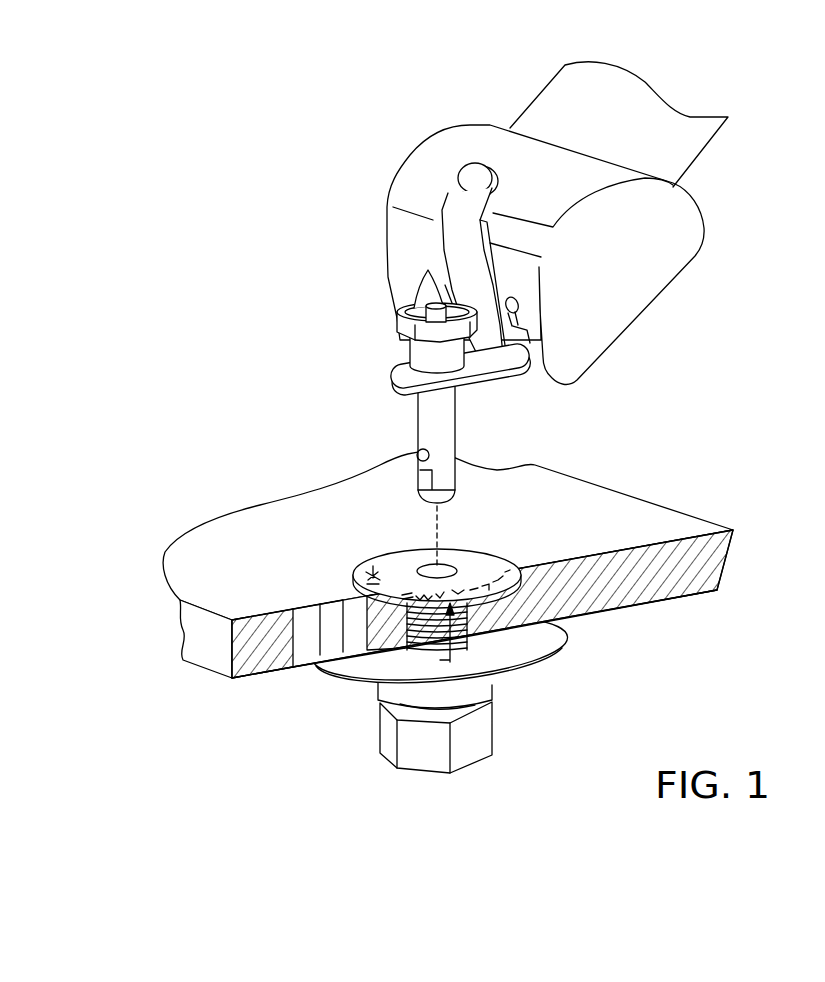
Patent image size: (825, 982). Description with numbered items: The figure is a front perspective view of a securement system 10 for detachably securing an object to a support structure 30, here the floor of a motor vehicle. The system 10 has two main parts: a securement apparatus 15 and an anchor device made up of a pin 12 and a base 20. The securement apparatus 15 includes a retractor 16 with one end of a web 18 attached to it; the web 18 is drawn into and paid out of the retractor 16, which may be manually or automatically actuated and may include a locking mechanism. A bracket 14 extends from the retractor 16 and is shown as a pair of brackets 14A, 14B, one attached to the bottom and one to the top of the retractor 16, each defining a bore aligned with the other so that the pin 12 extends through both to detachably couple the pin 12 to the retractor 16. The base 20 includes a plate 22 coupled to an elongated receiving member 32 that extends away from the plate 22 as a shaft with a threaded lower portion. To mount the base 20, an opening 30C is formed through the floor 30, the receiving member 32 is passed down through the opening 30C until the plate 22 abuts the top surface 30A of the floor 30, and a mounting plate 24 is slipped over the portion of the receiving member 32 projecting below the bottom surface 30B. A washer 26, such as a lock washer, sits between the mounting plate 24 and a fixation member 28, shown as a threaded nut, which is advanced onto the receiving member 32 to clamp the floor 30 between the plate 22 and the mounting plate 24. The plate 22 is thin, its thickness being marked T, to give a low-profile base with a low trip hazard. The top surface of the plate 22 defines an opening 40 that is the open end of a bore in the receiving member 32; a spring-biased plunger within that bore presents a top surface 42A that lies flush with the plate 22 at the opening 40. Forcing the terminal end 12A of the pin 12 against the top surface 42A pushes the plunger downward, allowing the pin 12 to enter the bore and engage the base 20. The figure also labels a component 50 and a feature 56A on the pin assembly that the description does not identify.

The securement system 10 is at (149, 330).
The pin 12 is at (400, 432).
The terminal end 12A is at (440, 503).
The bracket 14 is at (355, 362).
The bracket 14A is at (473, 390).
The bracket 14B is at (443, 231).
The securement apparatus 15 is at (344, 151).
The retractor 16 is at (643, 312).
The web 18 is at (708, 150).
The base 20 is at (598, 659).
The plate 22 is at (356, 578).
The mounting plate 24 is at (536, 674).
The washer 26 is at (378, 688).
The fixation member 28 is at (493, 730).
The support structure 30 is at (688, 494).
The top surface 30A is at (624, 535).
The bottom surface 30B is at (671, 596).
The opening 30C is at (528, 568).
The receiving member 32 is at (468, 636).
The opening 40 is at (411, 567).
The top surface 42A is at (426, 564).
The cap 50 is at (398, 328).
The tab 56A is at (420, 299).